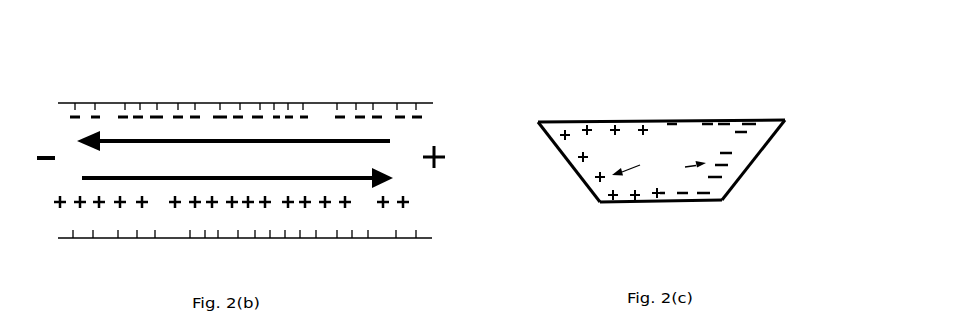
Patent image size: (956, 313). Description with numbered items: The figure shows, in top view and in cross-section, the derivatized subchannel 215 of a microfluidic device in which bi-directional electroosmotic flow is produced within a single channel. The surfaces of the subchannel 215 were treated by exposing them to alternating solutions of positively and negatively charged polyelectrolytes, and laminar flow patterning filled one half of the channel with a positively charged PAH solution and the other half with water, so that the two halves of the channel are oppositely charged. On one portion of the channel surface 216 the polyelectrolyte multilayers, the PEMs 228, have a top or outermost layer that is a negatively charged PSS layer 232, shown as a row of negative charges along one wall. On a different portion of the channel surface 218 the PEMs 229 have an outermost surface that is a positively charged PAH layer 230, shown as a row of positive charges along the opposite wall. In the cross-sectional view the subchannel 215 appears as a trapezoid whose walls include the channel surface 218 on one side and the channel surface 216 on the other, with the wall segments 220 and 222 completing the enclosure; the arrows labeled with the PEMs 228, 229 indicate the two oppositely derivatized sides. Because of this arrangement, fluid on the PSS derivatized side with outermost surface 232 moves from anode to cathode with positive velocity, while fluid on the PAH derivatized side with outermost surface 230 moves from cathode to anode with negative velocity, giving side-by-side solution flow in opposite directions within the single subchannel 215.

In FIG. 2B, the subchannel 215 is at (440, 251).
In FIG. 2C, the subchannel 215 is at (757, 208).
In FIG. 2B, the channel surface 216 is at (322, 102).
In FIG. 2C, the channel surface 216 is at (756, 160).
In FIG. 2B, the channel surface 218 is at (375, 238).
In FIG. 2C, the channel surface 218 is at (565, 162).
In FIG. 2C, the bottom channel wall 220 is at (610, 202).
In FIG. 2C, the top channel wall 222 is at (667, 119).
In FIG. 2C, the PEMs 228 is at (679, 174).
In FIG. 2C, the PEMs 229 is at (642, 159).
In FIG. 2B, the PAH layer 230 is at (163, 238).
In FIG. 2B, the PSS layer 232 is at (268, 102).